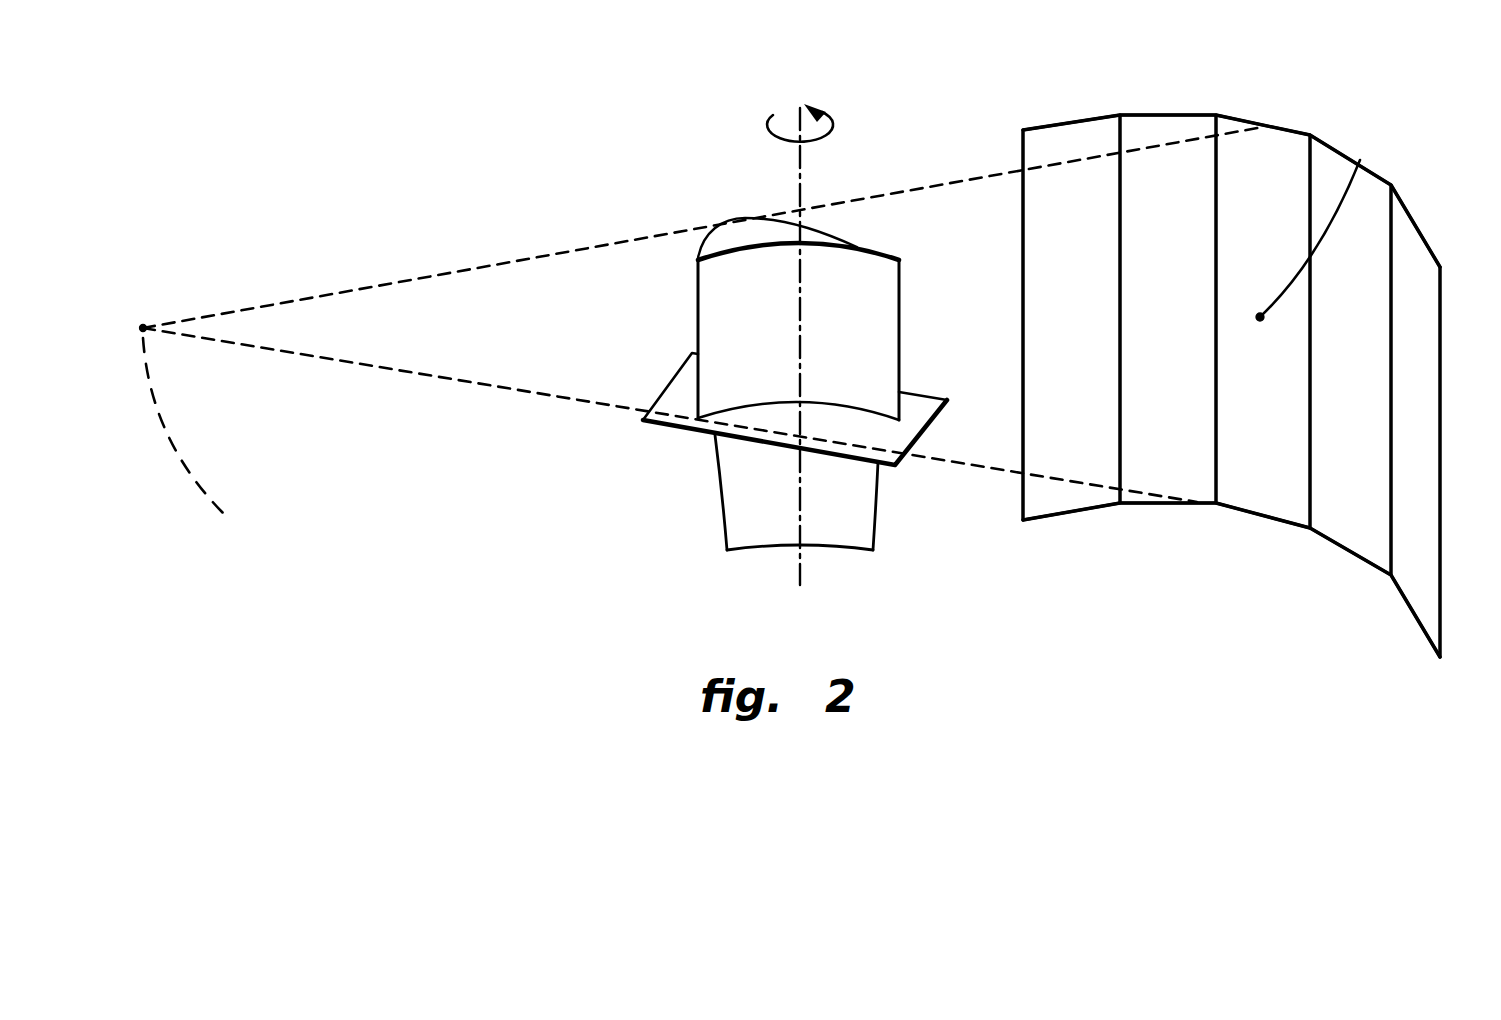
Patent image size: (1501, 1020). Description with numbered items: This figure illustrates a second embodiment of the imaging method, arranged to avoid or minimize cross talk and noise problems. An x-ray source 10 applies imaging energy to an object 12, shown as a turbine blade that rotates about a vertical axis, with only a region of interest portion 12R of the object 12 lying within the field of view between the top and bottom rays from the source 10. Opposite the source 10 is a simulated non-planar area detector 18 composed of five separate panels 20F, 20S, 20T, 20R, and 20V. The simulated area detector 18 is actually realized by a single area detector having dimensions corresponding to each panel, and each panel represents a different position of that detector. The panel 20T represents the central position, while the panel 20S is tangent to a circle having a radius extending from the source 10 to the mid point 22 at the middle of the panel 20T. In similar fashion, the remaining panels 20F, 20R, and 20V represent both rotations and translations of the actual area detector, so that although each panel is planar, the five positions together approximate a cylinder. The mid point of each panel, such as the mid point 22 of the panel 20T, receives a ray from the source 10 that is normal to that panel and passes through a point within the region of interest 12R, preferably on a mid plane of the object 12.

The x-ray source 10 is at (119, 376).
The object 12 is at (857, 248).
The region of interest portion 12R is at (900, 353).
The simulated non-planar area detector 18 is at (1265, 125).
The first panel 20F is at (1057, 517).
The second panel 20S is at (1155, 505).
The third (central) panel 20T is at (1263, 518).
The fourth panel 20R is at (1353, 553).
The fifth panel 20V is at (1427, 237).
The mid point 22 is at (1360, 160).